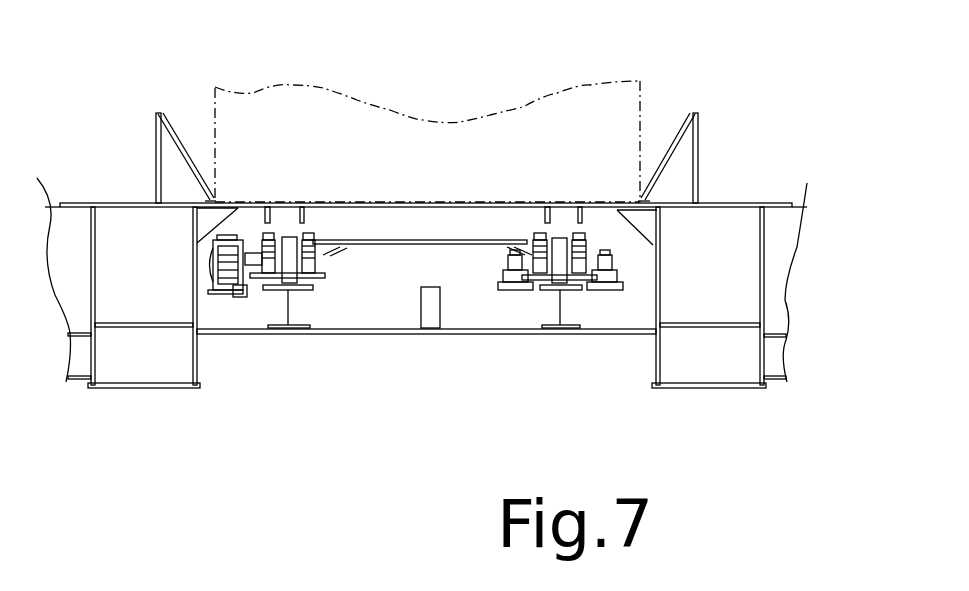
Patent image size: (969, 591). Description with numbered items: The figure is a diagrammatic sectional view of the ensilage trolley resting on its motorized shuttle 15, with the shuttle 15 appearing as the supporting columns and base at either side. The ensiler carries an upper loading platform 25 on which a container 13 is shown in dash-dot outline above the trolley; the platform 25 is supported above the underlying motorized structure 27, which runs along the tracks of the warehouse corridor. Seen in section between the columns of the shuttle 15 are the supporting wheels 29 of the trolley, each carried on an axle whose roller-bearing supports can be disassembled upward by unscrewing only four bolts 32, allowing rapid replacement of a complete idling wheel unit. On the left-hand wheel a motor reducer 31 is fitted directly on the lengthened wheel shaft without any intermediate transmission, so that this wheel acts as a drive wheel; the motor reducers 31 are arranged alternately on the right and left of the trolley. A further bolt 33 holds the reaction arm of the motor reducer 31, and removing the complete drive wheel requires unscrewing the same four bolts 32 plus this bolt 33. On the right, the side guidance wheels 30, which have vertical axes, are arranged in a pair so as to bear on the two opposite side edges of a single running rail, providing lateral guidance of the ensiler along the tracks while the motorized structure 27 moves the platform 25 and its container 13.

The container 13 is at (457, 120).
The motorized shuttle 15 is at (142, 388).
The upper loading platform 25 is at (412, 205).
The motorized structure 27 is at (320, 278).
The supporting wheel 29 is at (288, 237).
The side guidance wheel 30 is at (505, 290).
The motor reducer 31 is at (217, 262).
The bolt 32 is at (265, 236).
The bolt 33 is at (248, 288).